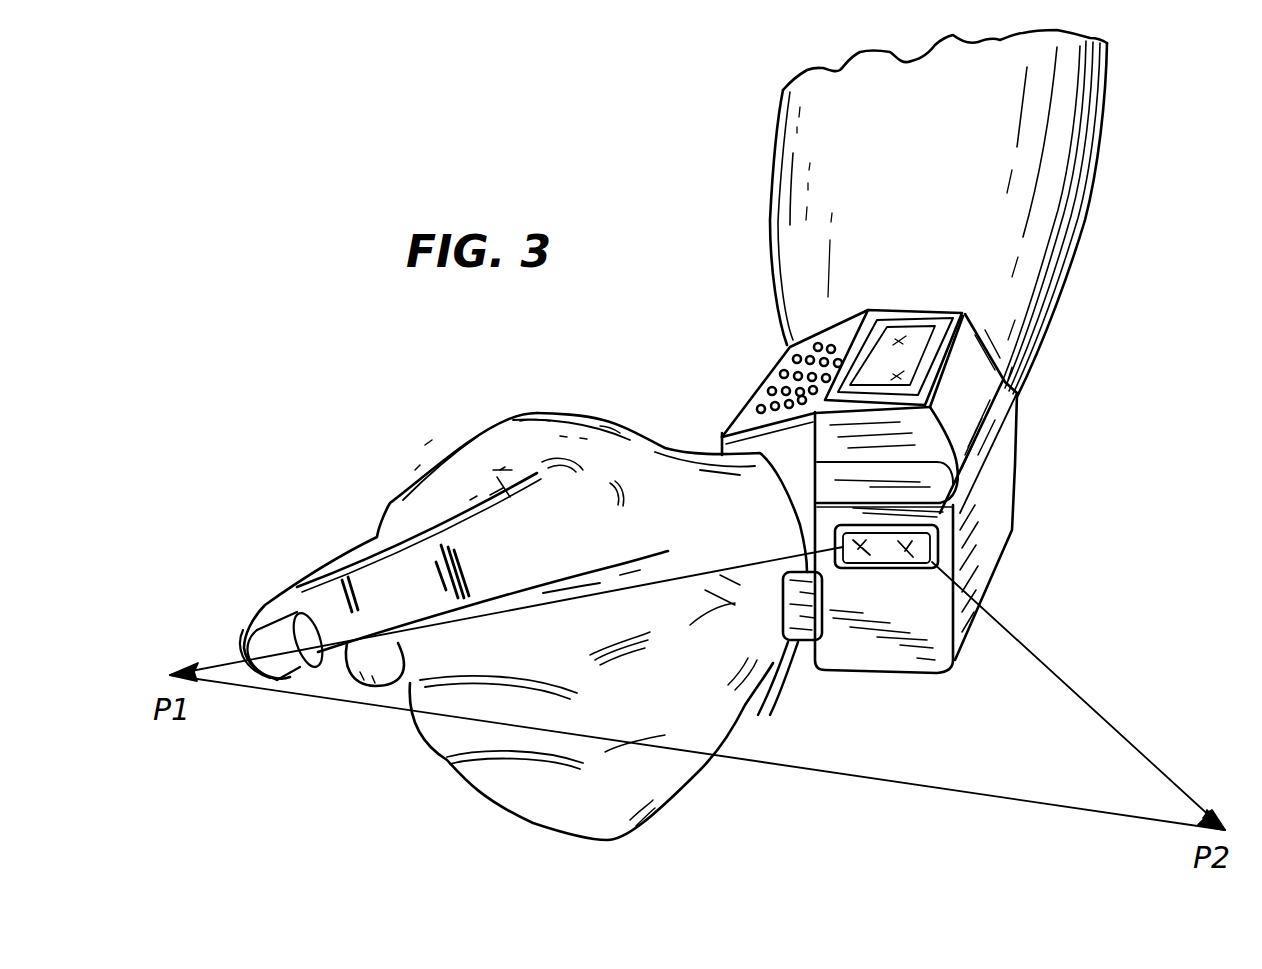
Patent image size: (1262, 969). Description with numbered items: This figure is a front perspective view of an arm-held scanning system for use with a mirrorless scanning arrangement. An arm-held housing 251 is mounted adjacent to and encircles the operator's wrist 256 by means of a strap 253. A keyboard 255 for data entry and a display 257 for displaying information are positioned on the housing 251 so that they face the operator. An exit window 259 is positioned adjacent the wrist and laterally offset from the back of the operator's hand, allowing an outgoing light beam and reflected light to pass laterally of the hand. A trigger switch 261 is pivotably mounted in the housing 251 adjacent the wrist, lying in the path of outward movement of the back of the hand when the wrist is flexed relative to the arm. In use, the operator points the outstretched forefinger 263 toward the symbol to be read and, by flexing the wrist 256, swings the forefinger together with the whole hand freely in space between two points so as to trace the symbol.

The arm-held housing 251 is at (1068, 418).
The strap 253 is at (803, 643).
The keyboard 255 is at (768, 381).
The wrist 256 is at (773, 315).
The display 257 is at (960, 283).
The exit window 259 is at (942, 530).
The trigger switch 261 is at (785, 612).
The forefinger 263 is at (310, 600).